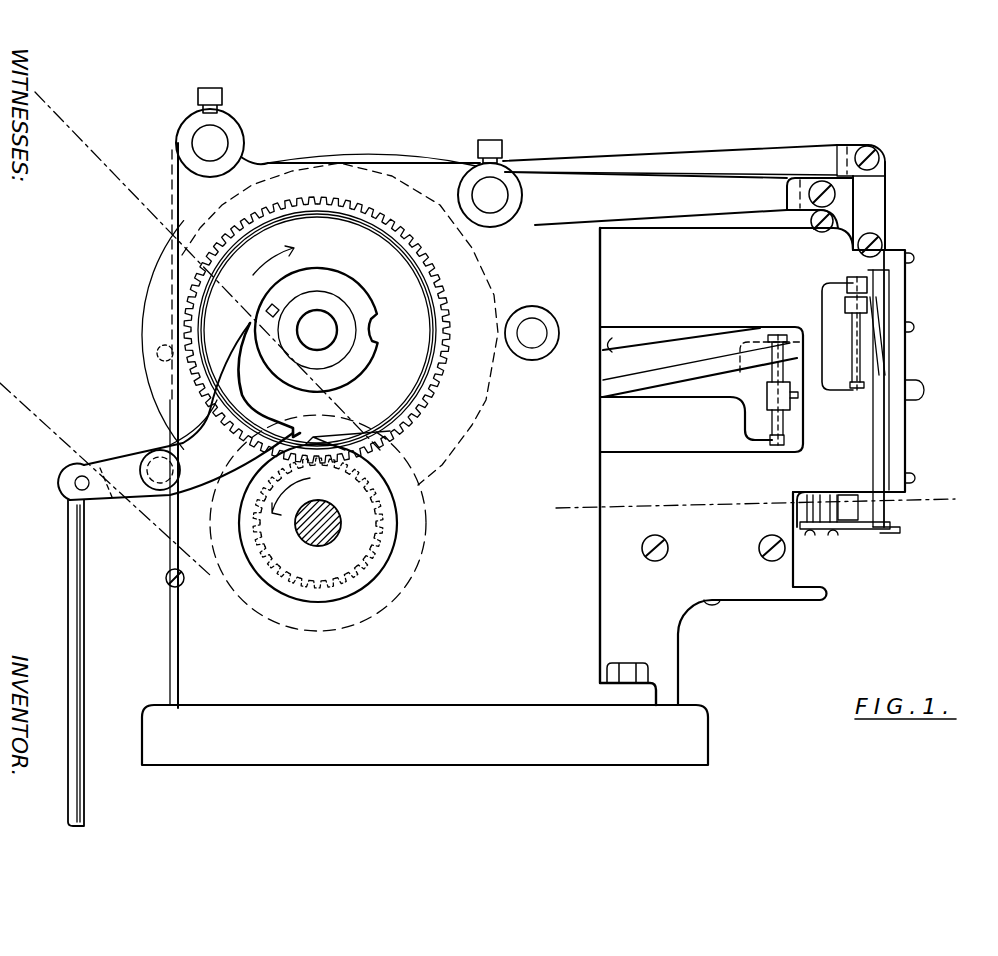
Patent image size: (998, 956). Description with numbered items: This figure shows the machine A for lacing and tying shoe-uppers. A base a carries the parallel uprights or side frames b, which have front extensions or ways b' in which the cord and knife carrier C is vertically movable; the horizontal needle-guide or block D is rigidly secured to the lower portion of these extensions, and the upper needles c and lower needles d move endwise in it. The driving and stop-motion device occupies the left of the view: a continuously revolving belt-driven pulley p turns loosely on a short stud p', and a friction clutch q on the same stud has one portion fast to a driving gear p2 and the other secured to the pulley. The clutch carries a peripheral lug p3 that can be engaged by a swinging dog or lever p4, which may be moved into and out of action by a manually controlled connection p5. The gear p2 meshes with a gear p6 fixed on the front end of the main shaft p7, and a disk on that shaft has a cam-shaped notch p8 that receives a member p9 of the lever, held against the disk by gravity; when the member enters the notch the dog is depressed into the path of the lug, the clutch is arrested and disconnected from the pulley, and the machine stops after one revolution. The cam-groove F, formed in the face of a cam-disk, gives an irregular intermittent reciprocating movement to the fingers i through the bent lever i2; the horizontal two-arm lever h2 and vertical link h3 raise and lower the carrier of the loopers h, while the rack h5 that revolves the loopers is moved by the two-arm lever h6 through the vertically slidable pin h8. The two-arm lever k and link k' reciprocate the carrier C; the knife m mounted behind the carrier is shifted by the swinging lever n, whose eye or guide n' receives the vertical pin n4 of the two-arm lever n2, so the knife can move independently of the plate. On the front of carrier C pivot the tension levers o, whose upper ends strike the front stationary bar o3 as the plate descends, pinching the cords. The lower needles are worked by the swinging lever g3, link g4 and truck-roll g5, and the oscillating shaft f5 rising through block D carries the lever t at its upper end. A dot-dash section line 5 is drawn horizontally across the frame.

The machine for lacing and tying shoe-uppers A is at (439, 100).
The cam-groove F is at (152, 275).
The base a is at (302, 755).
The side frames b is at (668, 466).
The front extensions b' is at (752, 368).
The upper needles c is at (855, 530).
The cord and knife carrier C is at (892, 505).
The lower needles d is at (797, 567).
The needle-guide or block D is at (747, 577).
The oscillating shaft f5 is at (713, 607).
The swinging lever g3 is at (173, 556).
The link g4 is at (173, 590).
The truck-roll g5 is at (158, 356).
The loopers h is at (833, 493).
The two-arm pivoted lever h2 is at (646, 198).
The vertical link h3 is at (840, 215).
The rack member h5 is at (798, 395).
The two-arm lever h6 is at (700, 397).
The vertically slidable pin h8 is at (786, 428).
The fingers i is at (800, 502).
The bent lever i2 is at (681, 349).
The two-arm lever k is at (694, 148).
The link k' is at (886, 209).
The cord-severing knife m is at (865, 530).
The swinging lever n is at (902, 388).
The eye or guide n' is at (839, 321).
The two-arm lever n2 is at (697, 367).
The vertical pin n4 is at (852, 328).
The tension levers o is at (911, 327).
The front stationary bar o3 is at (912, 383).
The belt-driven pulley p is at (337, 523).
The stud or shaft p' is at (331, 526).
The driving gear p2 is at (340, 505).
The peripheral lug p3 is at (343, 427).
The swinging dog or lever p4 is at (283, 427).
The manually controlled connection p5 is at (76, 607).
The gear p6 is at (410, 420).
The main shaft p7 is at (317, 330).
The cam-shaped notch p8 is at (380, 323).
The member of lever p9 is at (243, 342).
The friction-clutch q is at (395, 553).
The lever t is at (800, 515).
The section line 5- 5 is at (568, 494).